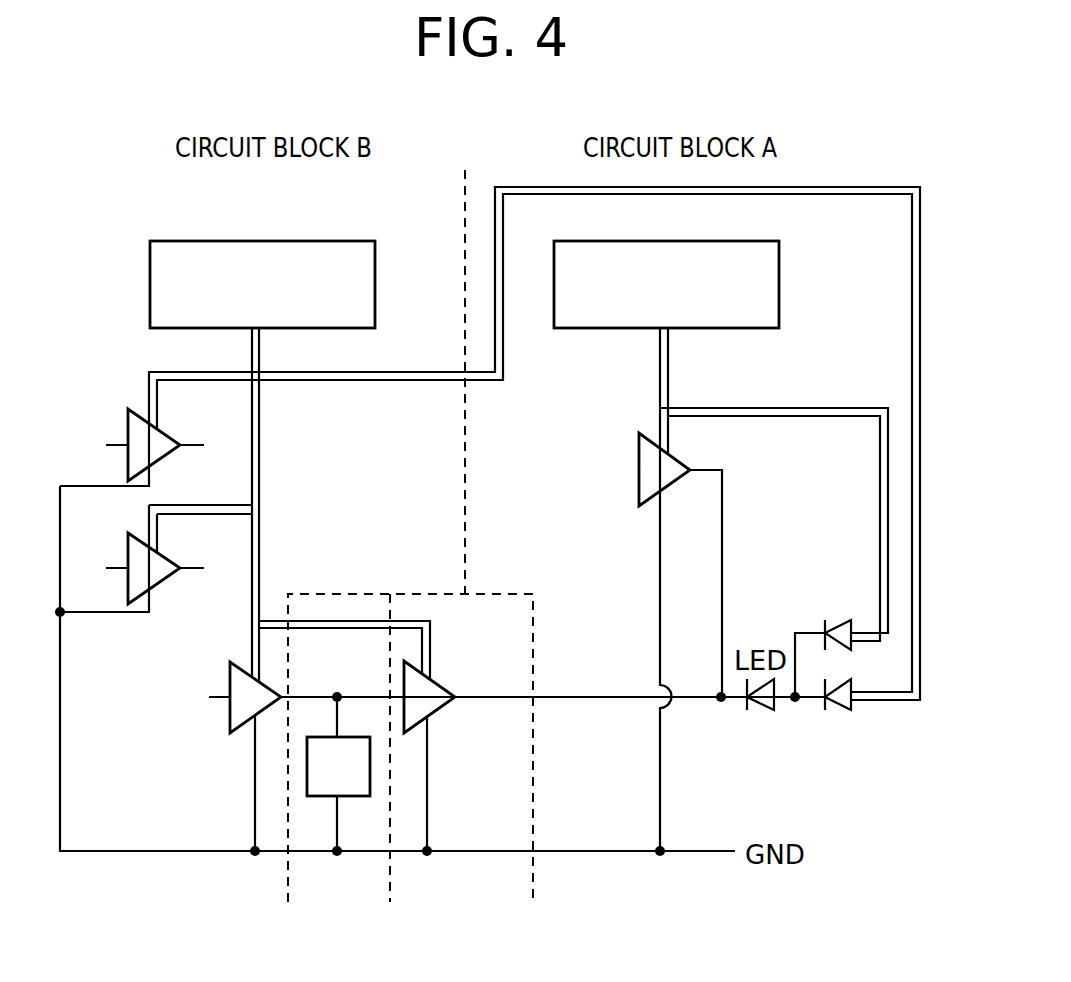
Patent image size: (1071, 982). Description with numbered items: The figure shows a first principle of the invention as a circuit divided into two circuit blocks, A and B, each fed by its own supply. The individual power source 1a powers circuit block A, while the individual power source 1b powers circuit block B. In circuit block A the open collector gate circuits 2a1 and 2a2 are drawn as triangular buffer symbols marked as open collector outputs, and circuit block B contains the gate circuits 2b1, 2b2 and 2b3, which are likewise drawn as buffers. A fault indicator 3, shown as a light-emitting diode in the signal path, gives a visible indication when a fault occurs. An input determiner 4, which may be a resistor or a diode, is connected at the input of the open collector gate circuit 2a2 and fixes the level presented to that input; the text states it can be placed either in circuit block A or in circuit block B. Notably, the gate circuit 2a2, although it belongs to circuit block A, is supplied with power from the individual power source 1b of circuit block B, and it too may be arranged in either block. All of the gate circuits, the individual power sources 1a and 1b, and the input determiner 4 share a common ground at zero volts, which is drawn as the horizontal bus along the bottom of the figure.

The individual power source 1a is at (780, 284).
The individual power source 1b is at (352, 241).
The open collector gate circuit 2a1 is at (683, 465).
The open collector gate circuit 2a2 is at (440, 686).
The gate circuit 2b1 is at (170, 438).
The gate circuit 2b2 is at (170, 561).
The gate circuit 2b3 is at (238, 667).
The fault indicator 3 is at (762, 706).
The input determiner 4 is at (350, 797).